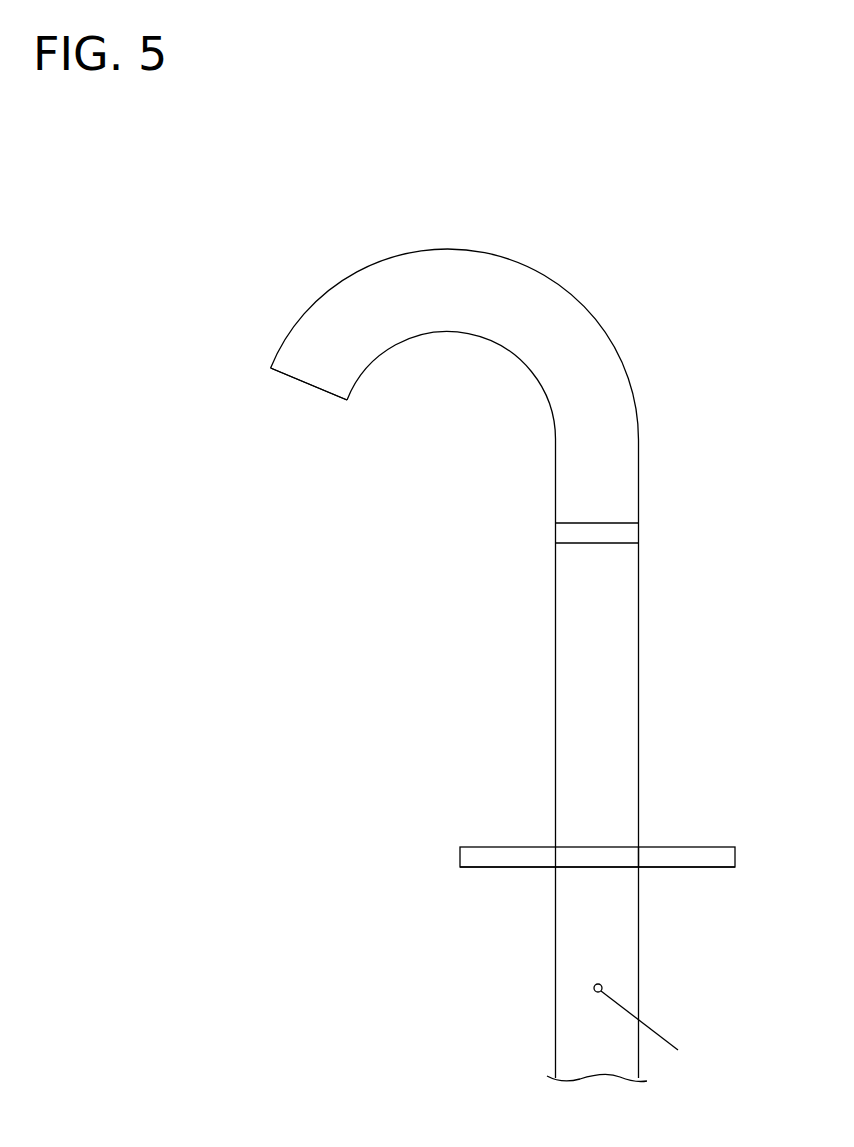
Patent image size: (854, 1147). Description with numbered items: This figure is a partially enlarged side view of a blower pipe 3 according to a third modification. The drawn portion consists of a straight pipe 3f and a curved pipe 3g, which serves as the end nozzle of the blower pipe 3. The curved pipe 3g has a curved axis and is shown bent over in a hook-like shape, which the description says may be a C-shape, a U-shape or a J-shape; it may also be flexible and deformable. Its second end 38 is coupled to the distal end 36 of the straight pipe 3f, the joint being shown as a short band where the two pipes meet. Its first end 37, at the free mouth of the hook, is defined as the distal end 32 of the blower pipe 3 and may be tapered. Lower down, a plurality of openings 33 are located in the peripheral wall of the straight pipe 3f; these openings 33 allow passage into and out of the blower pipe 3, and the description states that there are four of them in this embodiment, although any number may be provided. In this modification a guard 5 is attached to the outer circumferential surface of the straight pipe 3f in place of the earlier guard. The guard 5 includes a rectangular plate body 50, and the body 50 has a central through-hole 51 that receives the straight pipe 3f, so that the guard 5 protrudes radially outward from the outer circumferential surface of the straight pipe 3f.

The blower pipe 3 is at (673, 380).
The curved pipe 3g is at (630, 470).
The straight pipe 3f is at (630, 712).
The first end 37 is at (282, 374).
The distal end 32 is at (278, 404).
The second end 38 is at (554, 538).
The distal end 36 is at (555, 547).
The openings 33 is at (556, 990).
The guard 5 is at (513, 848).
The central through-hole 51 is at (640, 848).
The body 50 is at (538, 867).